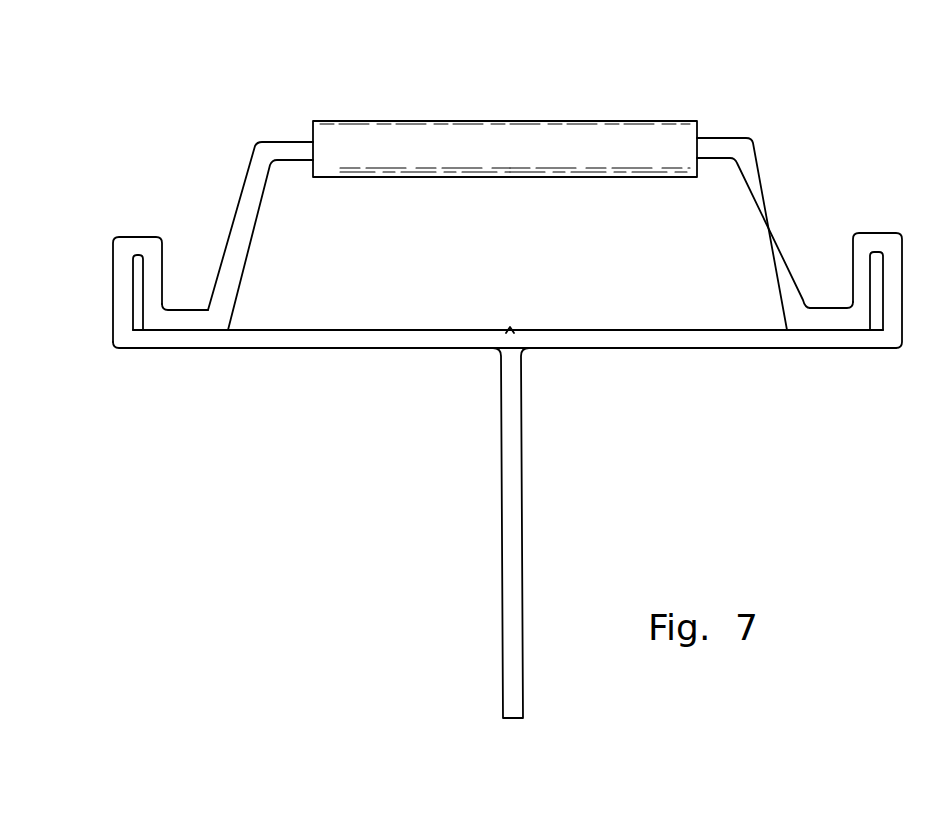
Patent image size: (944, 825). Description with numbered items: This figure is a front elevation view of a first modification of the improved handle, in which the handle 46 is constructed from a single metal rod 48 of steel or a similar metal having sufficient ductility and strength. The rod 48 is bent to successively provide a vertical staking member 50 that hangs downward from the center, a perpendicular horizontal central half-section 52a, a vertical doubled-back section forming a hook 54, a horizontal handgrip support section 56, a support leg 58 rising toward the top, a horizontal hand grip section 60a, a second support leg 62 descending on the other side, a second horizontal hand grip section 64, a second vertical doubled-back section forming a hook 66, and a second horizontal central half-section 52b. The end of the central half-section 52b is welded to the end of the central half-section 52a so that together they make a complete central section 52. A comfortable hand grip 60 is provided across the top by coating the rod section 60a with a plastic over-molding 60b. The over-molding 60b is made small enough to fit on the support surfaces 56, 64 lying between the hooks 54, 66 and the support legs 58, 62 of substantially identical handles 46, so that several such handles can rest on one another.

The handle 46 is at (690, 101).
The metal rod 48 is at (363, 348).
The vertical staking member 50 is at (473, 533).
The central section 52 is at (633, 350).
The horizontal central half-section 52a is at (428, 330).
The horizontal central half-section 52b is at (680, 330).
The hook 54 is at (115, 268).
The horizontal handgrip support section 56 is at (185, 312).
The support leg 58 is at (262, 216).
The hand grip 60 is at (542, 121).
The horizontal hand grip section 60a is at (710, 158).
The plastic over-molding 60b is at (610, 157).
The support leg 62 is at (778, 217).
The horizontal hand grip section 64 is at (822, 307).
The hook 66 is at (897, 293).